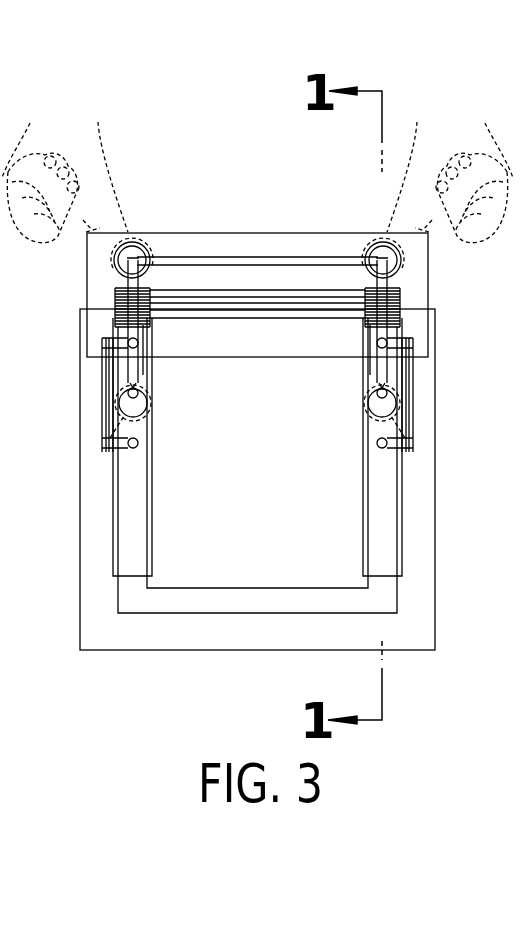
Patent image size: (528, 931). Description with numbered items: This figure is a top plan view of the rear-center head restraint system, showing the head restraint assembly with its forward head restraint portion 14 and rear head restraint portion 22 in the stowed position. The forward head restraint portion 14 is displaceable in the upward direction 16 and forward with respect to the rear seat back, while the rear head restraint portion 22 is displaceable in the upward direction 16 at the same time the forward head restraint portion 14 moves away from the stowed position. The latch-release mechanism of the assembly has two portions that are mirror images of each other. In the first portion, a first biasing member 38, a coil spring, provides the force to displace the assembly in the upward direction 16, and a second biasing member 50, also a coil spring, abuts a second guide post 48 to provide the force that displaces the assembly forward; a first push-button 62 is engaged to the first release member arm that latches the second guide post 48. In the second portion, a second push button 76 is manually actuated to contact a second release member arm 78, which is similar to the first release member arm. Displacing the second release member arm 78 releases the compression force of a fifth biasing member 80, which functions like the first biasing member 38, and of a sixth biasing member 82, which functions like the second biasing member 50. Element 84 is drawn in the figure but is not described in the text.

The forward head restraint portion 14 is at (425, 623).
The upward direction 16 is at (418, 95).
The rear head restraint portion 22 is at (433, 245).
The first biasing member 38 is at (410, 439).
The second guide post 48 is at (390, 582).
The second biasing member 50 is at (402, 293).
The first push-button 62 is at (365, 262).
The second push button 76 is at (155, 258).
The second release member arm 78 is at (130, 363).
The fifth biasing member 80 is at (107, 443).
The sixth biasing member 82 is at (118, 290).
The rail 84 is at (205, 265).